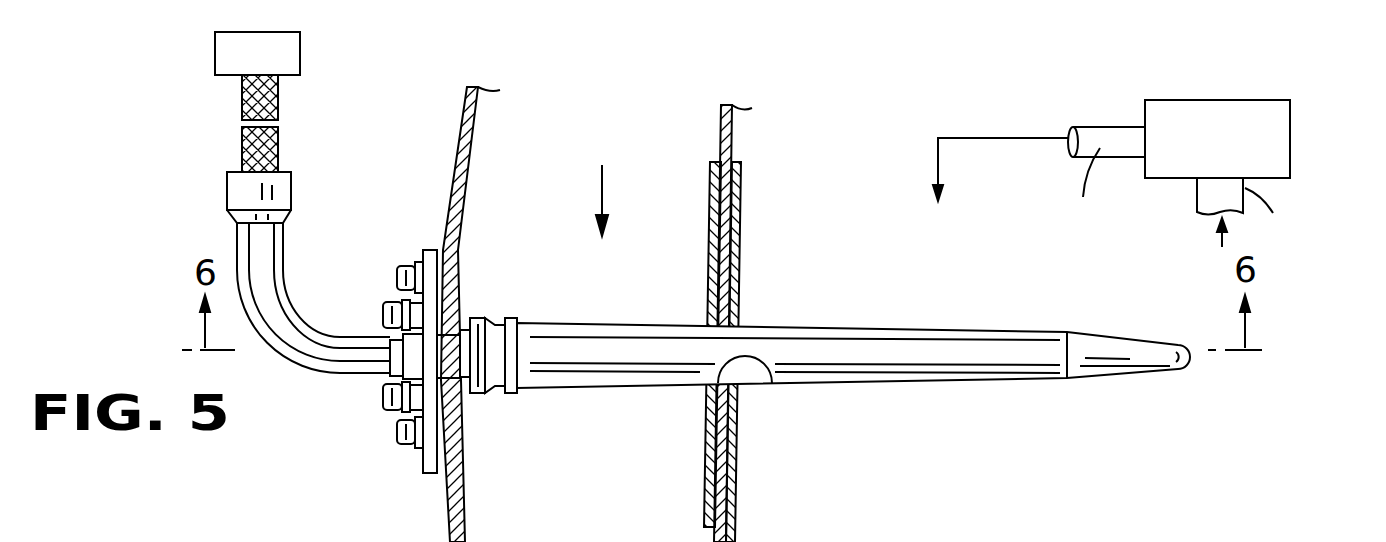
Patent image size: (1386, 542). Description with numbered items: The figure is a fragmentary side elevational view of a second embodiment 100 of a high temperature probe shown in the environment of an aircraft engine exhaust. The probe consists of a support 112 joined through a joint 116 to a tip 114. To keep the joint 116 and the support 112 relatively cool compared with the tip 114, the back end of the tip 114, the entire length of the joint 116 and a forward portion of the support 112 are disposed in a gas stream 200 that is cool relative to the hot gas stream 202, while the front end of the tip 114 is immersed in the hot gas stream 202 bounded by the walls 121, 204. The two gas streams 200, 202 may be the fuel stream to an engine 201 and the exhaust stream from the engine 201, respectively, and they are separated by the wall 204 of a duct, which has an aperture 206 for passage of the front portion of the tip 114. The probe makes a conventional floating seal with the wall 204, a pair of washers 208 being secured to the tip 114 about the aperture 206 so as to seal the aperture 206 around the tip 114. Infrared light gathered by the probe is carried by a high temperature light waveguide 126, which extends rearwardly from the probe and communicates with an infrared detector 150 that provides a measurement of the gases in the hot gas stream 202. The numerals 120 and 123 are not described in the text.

The second embodiment 100 is at (565, 265).
The support 112 is at (463, 393).
The tip 114 is at (975, 392).
The joint 116 is at (488, 404).
The flange plate 120 is at (444, 249).
The wall 121 is at (465, 540).
The bolts 123 is at (397, 277).
The high temperature light waveguide 126 is at (240, 150).
The infrared detector 150 is at (215, 47).
The cool gas stream 200 is at (603, 200).
The engine 201 is at (1200, 78).
The hot gas stream 202 is at (939, 160).
The wall 204 is at (800, 523).
The aperture 206 is at (772, 385).
The washers 208 is at (758, 297).